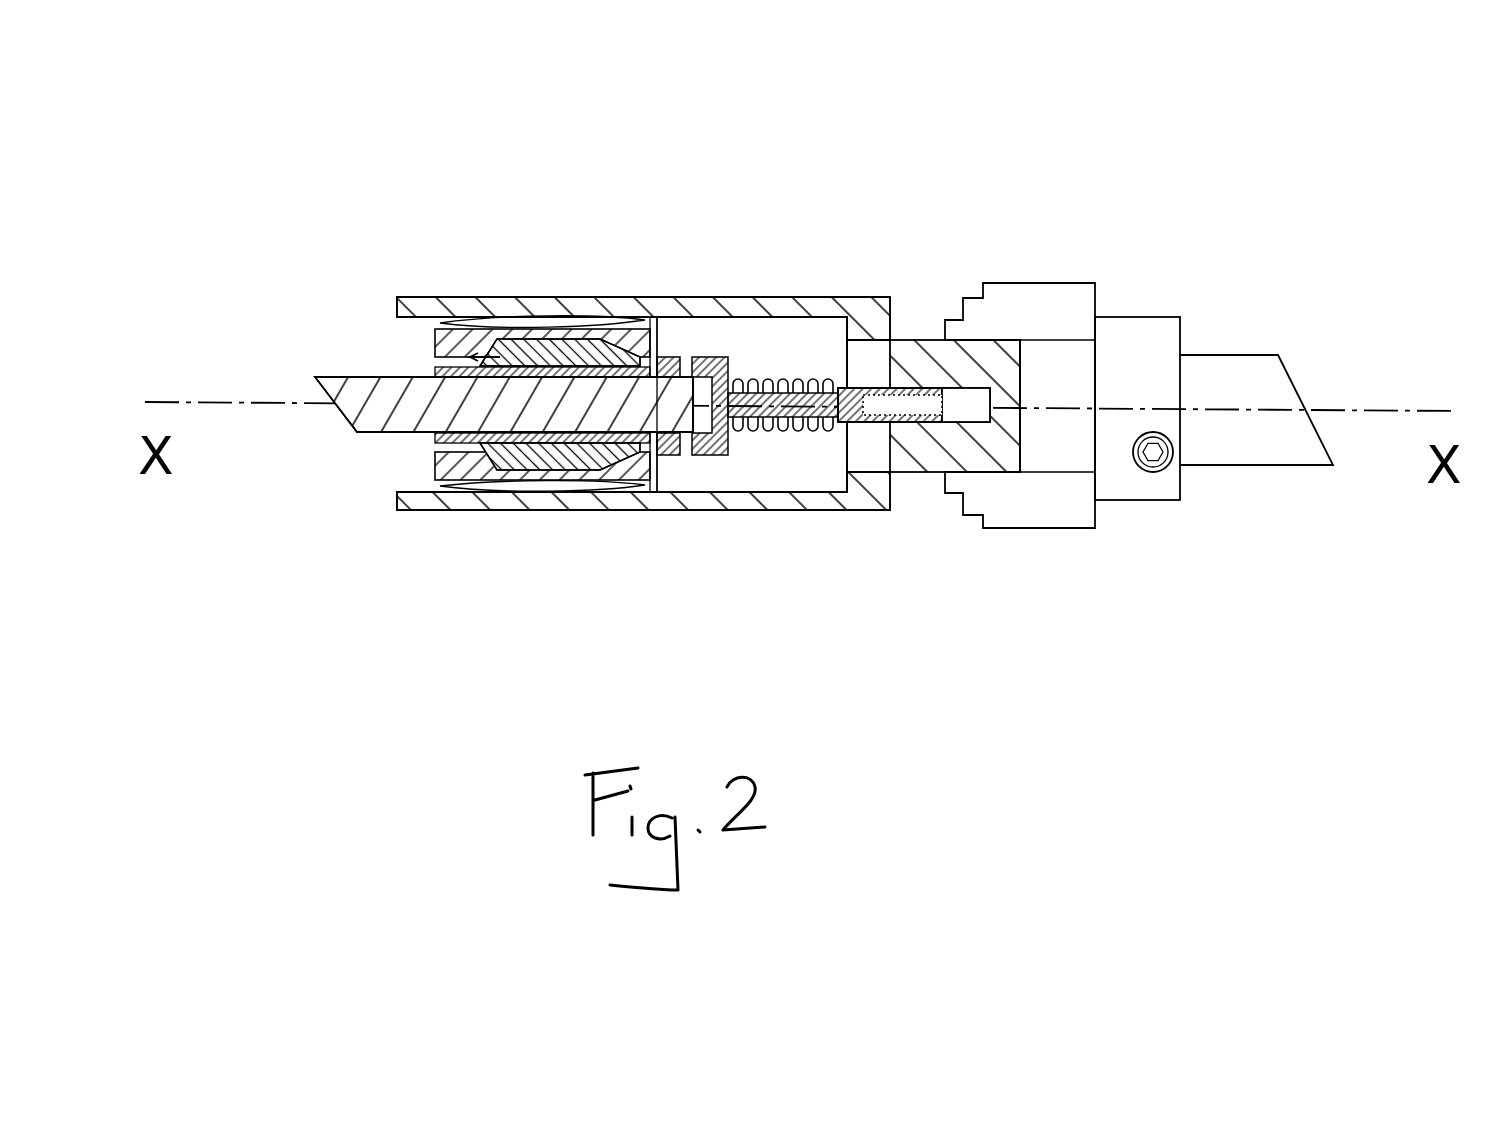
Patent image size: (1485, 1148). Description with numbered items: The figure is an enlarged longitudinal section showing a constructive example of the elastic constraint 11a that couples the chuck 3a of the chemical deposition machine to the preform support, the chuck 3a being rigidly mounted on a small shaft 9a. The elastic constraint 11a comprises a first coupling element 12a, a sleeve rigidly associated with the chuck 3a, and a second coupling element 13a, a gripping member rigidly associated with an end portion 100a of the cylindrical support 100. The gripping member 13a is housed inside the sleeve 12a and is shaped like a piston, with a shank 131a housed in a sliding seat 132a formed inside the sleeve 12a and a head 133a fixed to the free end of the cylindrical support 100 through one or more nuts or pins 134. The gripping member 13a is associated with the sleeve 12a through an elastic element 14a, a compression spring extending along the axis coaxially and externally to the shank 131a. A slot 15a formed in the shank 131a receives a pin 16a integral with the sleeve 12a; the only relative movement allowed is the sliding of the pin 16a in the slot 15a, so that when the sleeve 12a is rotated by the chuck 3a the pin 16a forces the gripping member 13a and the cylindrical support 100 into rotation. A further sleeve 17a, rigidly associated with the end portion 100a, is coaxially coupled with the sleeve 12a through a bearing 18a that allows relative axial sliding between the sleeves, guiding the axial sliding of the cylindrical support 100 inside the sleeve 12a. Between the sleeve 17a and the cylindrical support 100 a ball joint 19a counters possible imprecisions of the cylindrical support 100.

The chuck 3a is at (1053, 303).
The small shaft 9a is at (1255, 382).
The elastic constraint 11a is at (493, 258).
The first coupling element 12a is at (590, 298).
The second coupling element 13a is at (735, 452).
The elastic element 14a is at (777, 427).
The slot 15a is at (913, 390).
The pin 16a is at (887, 403).
The further sleeve 17a is at (440, 460).
The bearing 18a is at (447, 483).
The ball joint 19a is at (560, 452).
The cylindrical support 100 is at (353, 413).
The end portion 100a is at (663, 410).
The shank 131a is at (845, 405).
The sliding seat 132a is at (970, 410).
The head 133a is at (720, 357).
The nuts or pins 134 is at (690, 357).